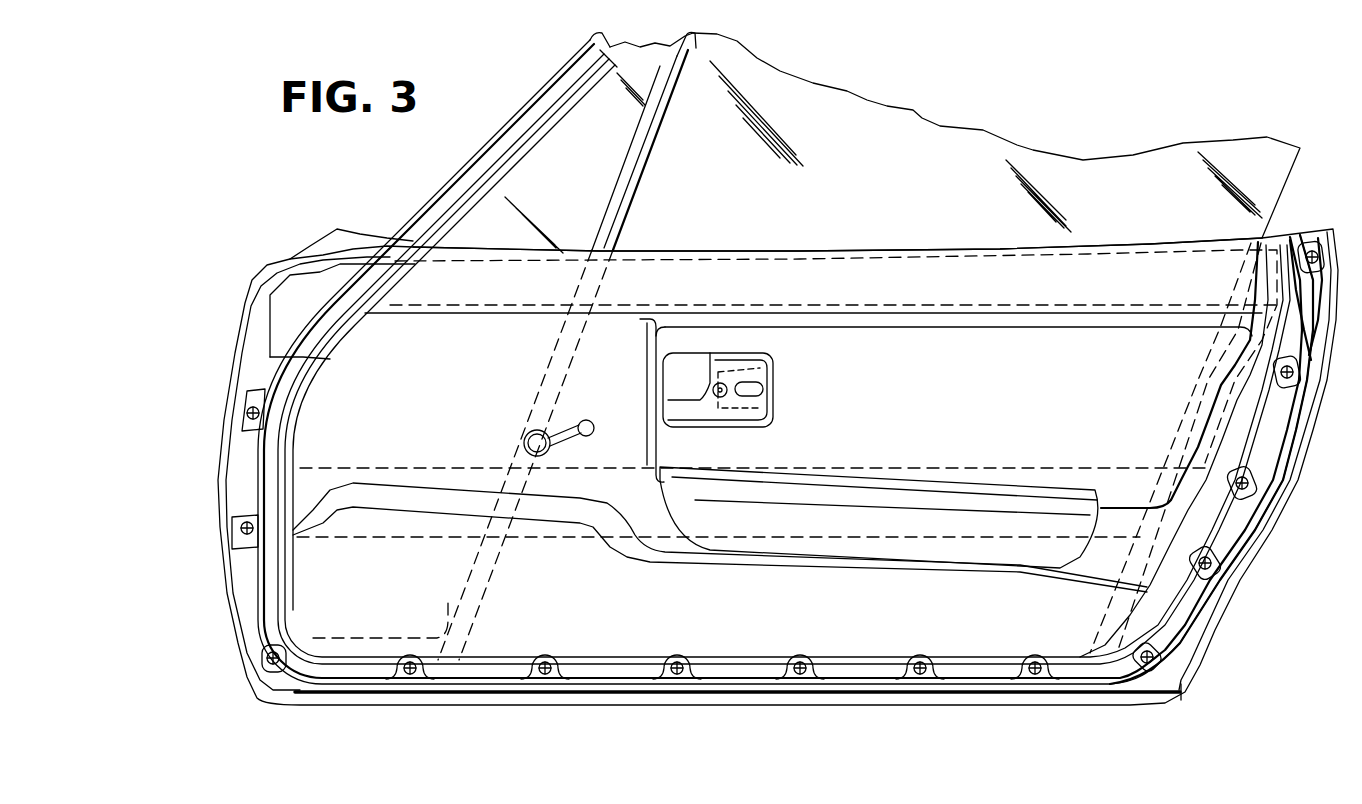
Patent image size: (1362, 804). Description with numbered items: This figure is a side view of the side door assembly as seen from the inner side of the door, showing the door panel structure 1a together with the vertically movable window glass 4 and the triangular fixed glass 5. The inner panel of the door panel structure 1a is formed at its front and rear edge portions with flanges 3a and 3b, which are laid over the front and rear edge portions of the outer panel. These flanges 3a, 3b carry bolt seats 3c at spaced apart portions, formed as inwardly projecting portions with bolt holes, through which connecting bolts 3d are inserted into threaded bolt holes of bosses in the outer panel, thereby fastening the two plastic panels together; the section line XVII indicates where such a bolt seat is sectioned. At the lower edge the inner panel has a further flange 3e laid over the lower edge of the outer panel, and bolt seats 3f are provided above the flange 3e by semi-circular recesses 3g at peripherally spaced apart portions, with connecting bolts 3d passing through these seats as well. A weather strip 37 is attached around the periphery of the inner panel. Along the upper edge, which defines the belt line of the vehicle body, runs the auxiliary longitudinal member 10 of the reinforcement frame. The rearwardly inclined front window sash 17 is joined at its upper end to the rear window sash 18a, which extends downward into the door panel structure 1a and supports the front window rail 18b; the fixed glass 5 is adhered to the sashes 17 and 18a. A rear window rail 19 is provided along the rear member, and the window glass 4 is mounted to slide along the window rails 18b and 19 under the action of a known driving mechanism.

The door panel structure 1a is at (300, 262).
The front flange 3a is at (243, 453).
The rear flange 3b is at (1262, 440).
The bolt seat 3c is at (247, 402).
The connecting bolt 3d is at (248, 412).
The lower flange 3e is at (732, 688).
The bolt seat 3f is at (793, 678).
The semi-circular recess 3g is at (670, 657).
The window glass 4 is at (1015, 155).
The triangular fixed glass 5 is at (630, 57).
The auxiliary longitudinal member 10 is at (853, 258).
The front window sash 17 is at (590, 53).
The rear window sash 18a is at (637, 138).
The front window rail 18b is at (633, 185).
The rear window rail 19 is at (1198, 374).
The weather strip 37 is at (467, 182).
The section line XVII- XVII is at (253, 380).